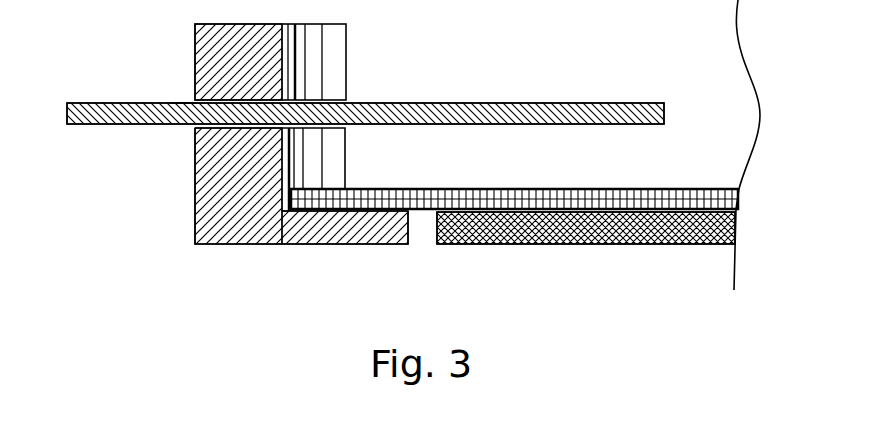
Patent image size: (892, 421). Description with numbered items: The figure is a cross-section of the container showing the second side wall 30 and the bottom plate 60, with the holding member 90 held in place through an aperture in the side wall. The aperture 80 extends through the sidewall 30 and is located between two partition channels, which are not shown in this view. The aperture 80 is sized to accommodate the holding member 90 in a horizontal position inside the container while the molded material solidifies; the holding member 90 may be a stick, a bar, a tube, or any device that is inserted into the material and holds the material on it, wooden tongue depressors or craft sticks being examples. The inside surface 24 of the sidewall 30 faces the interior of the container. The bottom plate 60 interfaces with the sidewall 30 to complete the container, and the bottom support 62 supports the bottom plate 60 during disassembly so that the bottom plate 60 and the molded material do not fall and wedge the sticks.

The inside surface 24 is at (330, 76).
The second side wall 30 is at (195, 167).
The bottom plate 60 is at (639, 188).
The bottom support 62 is at (562, 245).
The aperture 80 is at (185, 102).
The holding member 90 is at (111, 103).